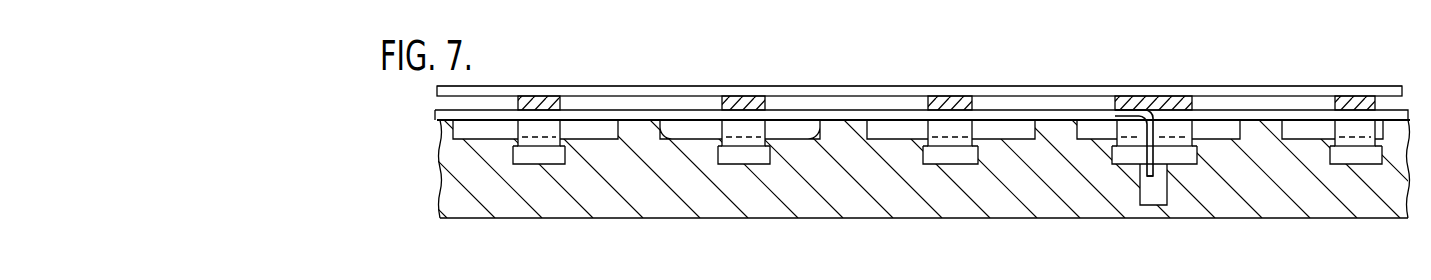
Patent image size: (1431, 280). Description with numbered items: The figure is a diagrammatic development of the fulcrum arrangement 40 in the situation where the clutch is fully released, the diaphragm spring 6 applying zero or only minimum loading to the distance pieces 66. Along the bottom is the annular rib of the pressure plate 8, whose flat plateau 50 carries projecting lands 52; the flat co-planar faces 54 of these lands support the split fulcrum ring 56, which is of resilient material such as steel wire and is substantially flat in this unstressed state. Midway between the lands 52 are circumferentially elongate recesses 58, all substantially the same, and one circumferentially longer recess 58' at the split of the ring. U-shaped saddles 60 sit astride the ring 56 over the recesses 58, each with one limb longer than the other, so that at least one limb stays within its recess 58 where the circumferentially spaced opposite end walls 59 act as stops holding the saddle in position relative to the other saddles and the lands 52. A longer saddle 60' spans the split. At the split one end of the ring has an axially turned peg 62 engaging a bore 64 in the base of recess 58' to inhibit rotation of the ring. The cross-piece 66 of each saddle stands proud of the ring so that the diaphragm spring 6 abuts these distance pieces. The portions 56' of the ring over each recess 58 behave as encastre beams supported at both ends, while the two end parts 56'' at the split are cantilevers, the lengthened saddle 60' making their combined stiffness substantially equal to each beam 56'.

The diaphragm spring 6 is at (684, 82).
The pressure plate 8 is at (509, 226).
The fulcrum arrangement 40 is at (1002, 103).
The flat plateau 50 is at (887, 138).
The lands 52 is at (670, 141).
The co-planar faces 54 is at (633, 120).
The fulcrum ring 56 is at (567, 75).
The portions of fulcrum ring 56' is at (1054, 75).
The end parts of fulcrum ring 56'' is at (1151, 71).
The recesses 58 is at (641, 202).
The recess 58' is at (1128, 202).
The end walls 59 is at (977, 153).
The saddles 60 is at (933, 88).
The saddle 60' is at (1144, 102).
The peg 62 is at (1152, 178).
The bore 64 is at (1160, 195).
The cross-piece 66 is at (547, 102).